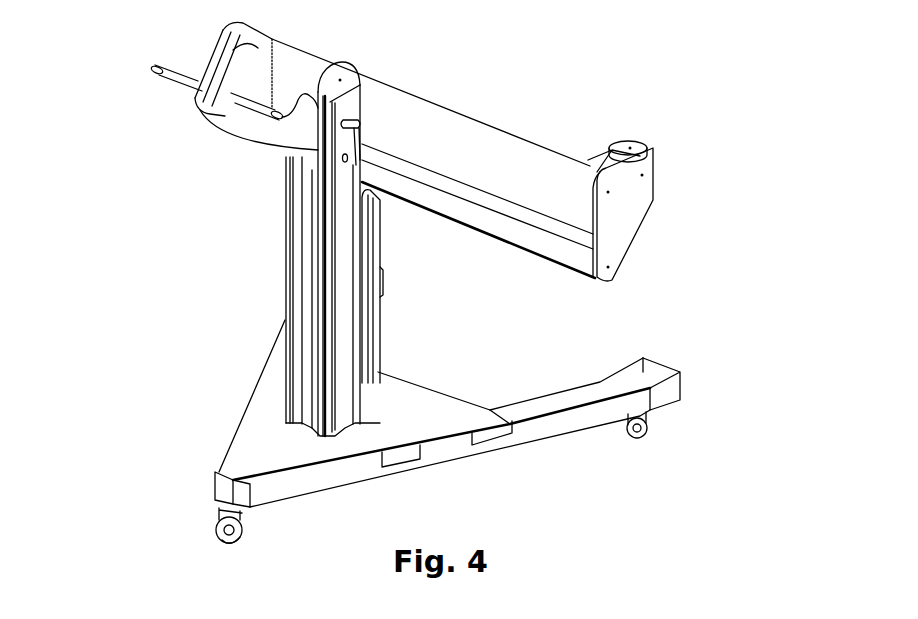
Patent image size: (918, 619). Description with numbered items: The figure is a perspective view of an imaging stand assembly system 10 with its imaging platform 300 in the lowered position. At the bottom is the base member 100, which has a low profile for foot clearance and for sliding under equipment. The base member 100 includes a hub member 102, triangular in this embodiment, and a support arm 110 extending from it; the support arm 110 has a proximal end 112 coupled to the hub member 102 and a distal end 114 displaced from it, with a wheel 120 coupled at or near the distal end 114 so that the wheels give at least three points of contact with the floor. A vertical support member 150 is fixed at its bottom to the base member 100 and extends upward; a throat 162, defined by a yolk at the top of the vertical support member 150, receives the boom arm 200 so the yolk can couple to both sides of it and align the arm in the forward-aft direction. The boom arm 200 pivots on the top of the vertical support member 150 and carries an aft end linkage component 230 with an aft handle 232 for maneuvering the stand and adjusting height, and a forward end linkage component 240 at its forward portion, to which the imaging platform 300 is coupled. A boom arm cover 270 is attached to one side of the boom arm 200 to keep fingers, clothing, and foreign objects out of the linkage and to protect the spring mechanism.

The imaging stand assembly system 10 is at (597, 70).
The base member 100 is at (463, 467).
The hub member 102 is at (405, 395).
The support arm 110 is at (558, 397).
The proximal end 112 is at (518, 440).
The distal end 114 is at (650, 368).
The wheel 120 is at (636, 438).
The vertical support member 150 is at (285, 265).
The throat 162 is at (312, 133).
The boom arm 200 is at (418, 92).
The aft end linkage component 230 is at (207, 108).
The aft handle 232 is at (134, 73).
The forward end linkage component 240 is at (653, 185).
The boom arm cover 270 is at (470, 142).
The imaging platform 300 is at (637, 138).